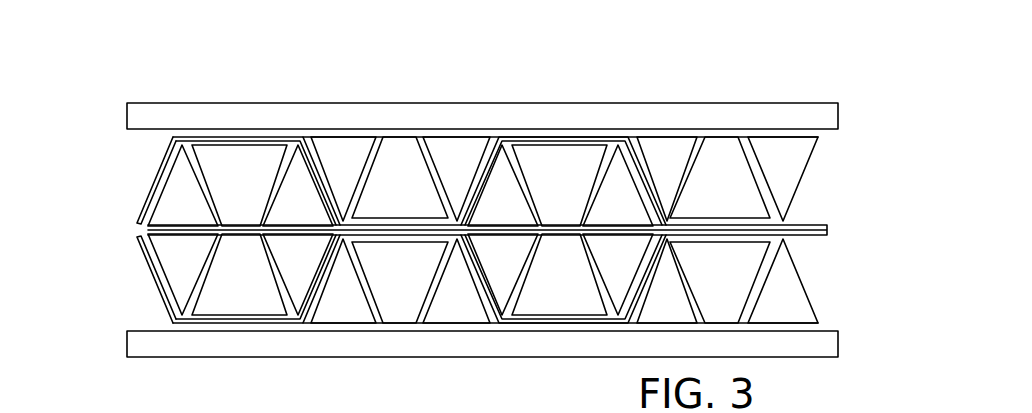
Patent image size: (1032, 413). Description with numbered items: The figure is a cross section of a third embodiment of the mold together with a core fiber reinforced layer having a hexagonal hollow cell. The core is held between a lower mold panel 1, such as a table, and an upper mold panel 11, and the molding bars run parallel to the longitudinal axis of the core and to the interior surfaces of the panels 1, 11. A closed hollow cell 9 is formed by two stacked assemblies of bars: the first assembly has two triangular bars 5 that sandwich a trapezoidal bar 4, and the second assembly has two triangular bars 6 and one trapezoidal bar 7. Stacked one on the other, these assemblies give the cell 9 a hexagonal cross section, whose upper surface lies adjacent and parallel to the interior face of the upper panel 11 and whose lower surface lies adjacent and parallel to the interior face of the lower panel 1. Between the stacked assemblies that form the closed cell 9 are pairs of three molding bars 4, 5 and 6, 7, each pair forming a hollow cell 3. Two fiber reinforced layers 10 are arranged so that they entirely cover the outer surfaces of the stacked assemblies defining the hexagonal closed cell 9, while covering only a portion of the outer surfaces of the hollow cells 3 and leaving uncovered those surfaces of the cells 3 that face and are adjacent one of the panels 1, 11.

The lower mold panel 1 is at (815, 345).
The hollow cell 3 is at (403, 300).
The trapezoidal molding bar 4 is at (233, 302).
The triangular molding bar 5 is at (163, 278).
The triangular molding bar 6 is at (182, 190).
The trapezoidal molding bar 7 is at (245, 167).
The hexagonal closed hollow cell 9 is at (566, 262).
The fiber reinforced layer 10 is at (138, 246).
The upper mold panel 11 is at (805, 118).